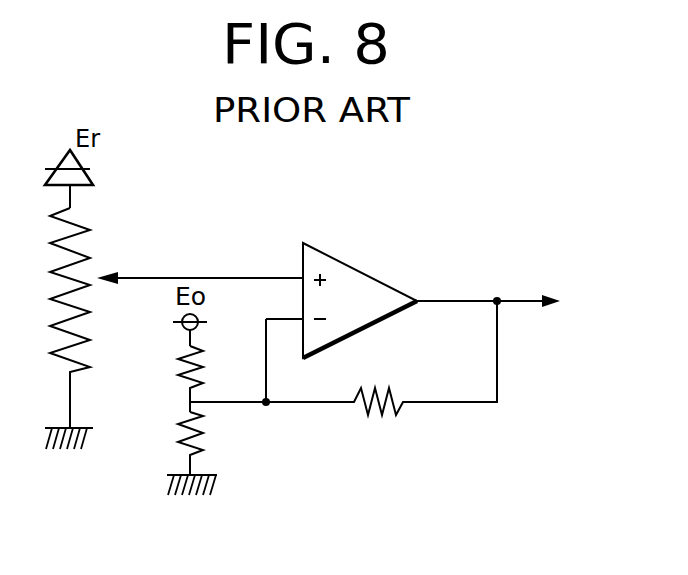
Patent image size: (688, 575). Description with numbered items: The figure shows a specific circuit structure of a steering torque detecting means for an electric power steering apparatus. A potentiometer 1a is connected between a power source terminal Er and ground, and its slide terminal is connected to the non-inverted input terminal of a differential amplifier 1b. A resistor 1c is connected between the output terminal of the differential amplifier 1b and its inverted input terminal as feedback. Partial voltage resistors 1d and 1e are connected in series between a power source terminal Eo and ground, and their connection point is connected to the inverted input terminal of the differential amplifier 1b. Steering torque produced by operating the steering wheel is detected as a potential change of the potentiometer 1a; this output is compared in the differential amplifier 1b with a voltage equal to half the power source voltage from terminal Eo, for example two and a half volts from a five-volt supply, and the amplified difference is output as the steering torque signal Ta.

The potentiometer 1a is at (88, 241).
The differential amplifier 1b is at (351, 266).
The resistor 1c is at (383, 391).
The partial voltage resistor 1d is at (203, 369).
The partial voltage resistor 1e is at (203, 436).